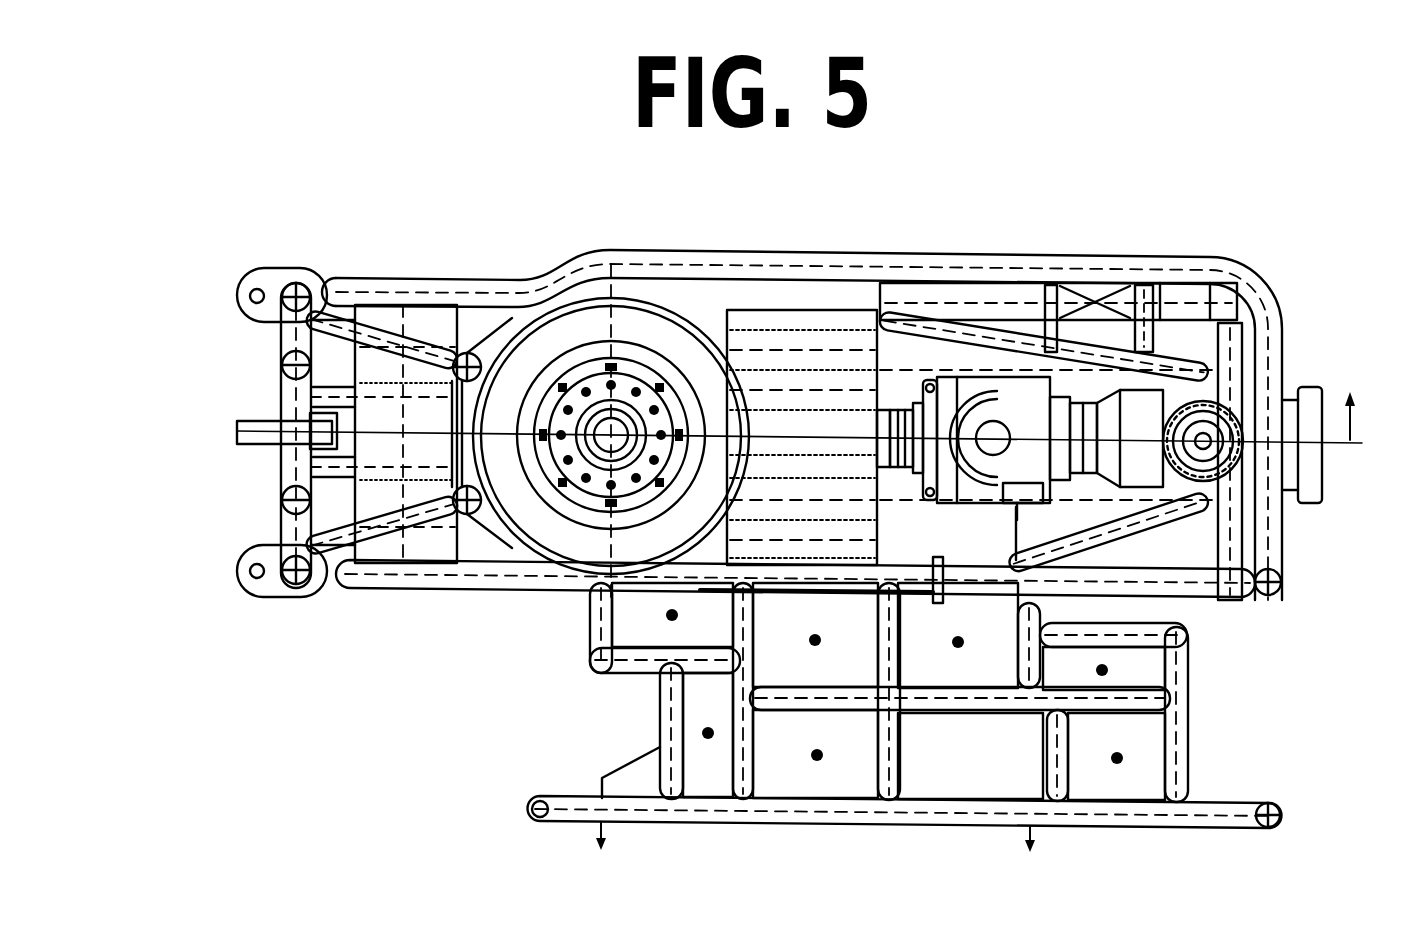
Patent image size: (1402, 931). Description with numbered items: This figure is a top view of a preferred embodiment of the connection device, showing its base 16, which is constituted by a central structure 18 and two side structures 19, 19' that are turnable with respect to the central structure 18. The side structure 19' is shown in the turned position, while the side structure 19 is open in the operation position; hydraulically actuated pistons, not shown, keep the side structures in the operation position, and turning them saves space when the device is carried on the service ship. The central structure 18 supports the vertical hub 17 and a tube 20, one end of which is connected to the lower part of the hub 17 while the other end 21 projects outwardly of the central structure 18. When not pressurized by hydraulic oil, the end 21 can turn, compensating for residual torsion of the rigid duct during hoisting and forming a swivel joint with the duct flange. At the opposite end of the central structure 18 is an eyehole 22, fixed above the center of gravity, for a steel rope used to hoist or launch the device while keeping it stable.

The base 16 is at (1250, 622).
The vertical hub 17 is at (546, 543).
The central structure 18 is at (378, 583).
The side structure 19 is at (905, 850).
The side structure 19' is at (816, 409).
The tube 20 is at (1130, 415).
The end of the tube 21 is at (1312, 482).
The eyehole 22 is at (255, 437).